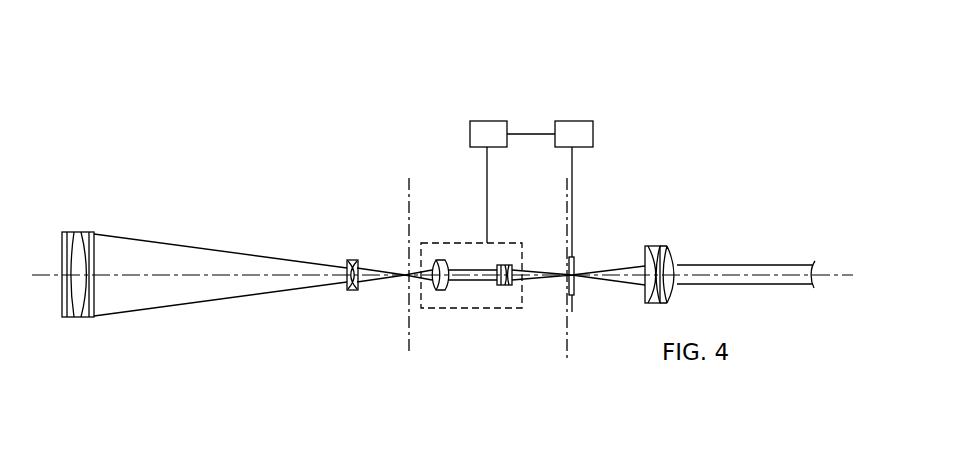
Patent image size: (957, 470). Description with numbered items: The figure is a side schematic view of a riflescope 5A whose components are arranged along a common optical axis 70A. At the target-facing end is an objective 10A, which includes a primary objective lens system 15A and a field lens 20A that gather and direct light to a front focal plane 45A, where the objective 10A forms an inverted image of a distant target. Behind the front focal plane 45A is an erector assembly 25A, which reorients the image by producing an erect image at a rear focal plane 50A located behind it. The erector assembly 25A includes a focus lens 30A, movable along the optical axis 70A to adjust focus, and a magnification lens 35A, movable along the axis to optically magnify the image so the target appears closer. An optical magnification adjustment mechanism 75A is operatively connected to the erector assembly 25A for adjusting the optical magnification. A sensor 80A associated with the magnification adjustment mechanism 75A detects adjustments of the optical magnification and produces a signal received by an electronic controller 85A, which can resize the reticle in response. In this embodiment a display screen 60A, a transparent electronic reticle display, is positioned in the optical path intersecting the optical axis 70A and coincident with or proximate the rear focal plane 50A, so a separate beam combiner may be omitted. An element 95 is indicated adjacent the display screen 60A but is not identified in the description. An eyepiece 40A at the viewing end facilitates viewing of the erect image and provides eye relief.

The riflescope 5A is at (297, 93).
The objective 10A is at (218, 267).
The primary objective lens system 15A is at (78, 320).
The field lens 20A is at (353, 292).
The optical axis 70A is at (155, 276).
The front focal plane 45A is at (409, 357).
The optical magnification adjustment mechanism 75A is at (482, 243).
The erector assembly 25A is at (478, 281).
The focus lens 30A is at (437, 258).
The magnification lens 35A is at (503, 263).
The rear focal plane 50A is at (568, 322).
The sensor 80A is at (487, 121).
The electronic controller 85A is at (571, 121).
The display screen 60A is at (576, 268).
The mount 95 is at (574, 296).
The eyepiece 40A is at (662, 246).